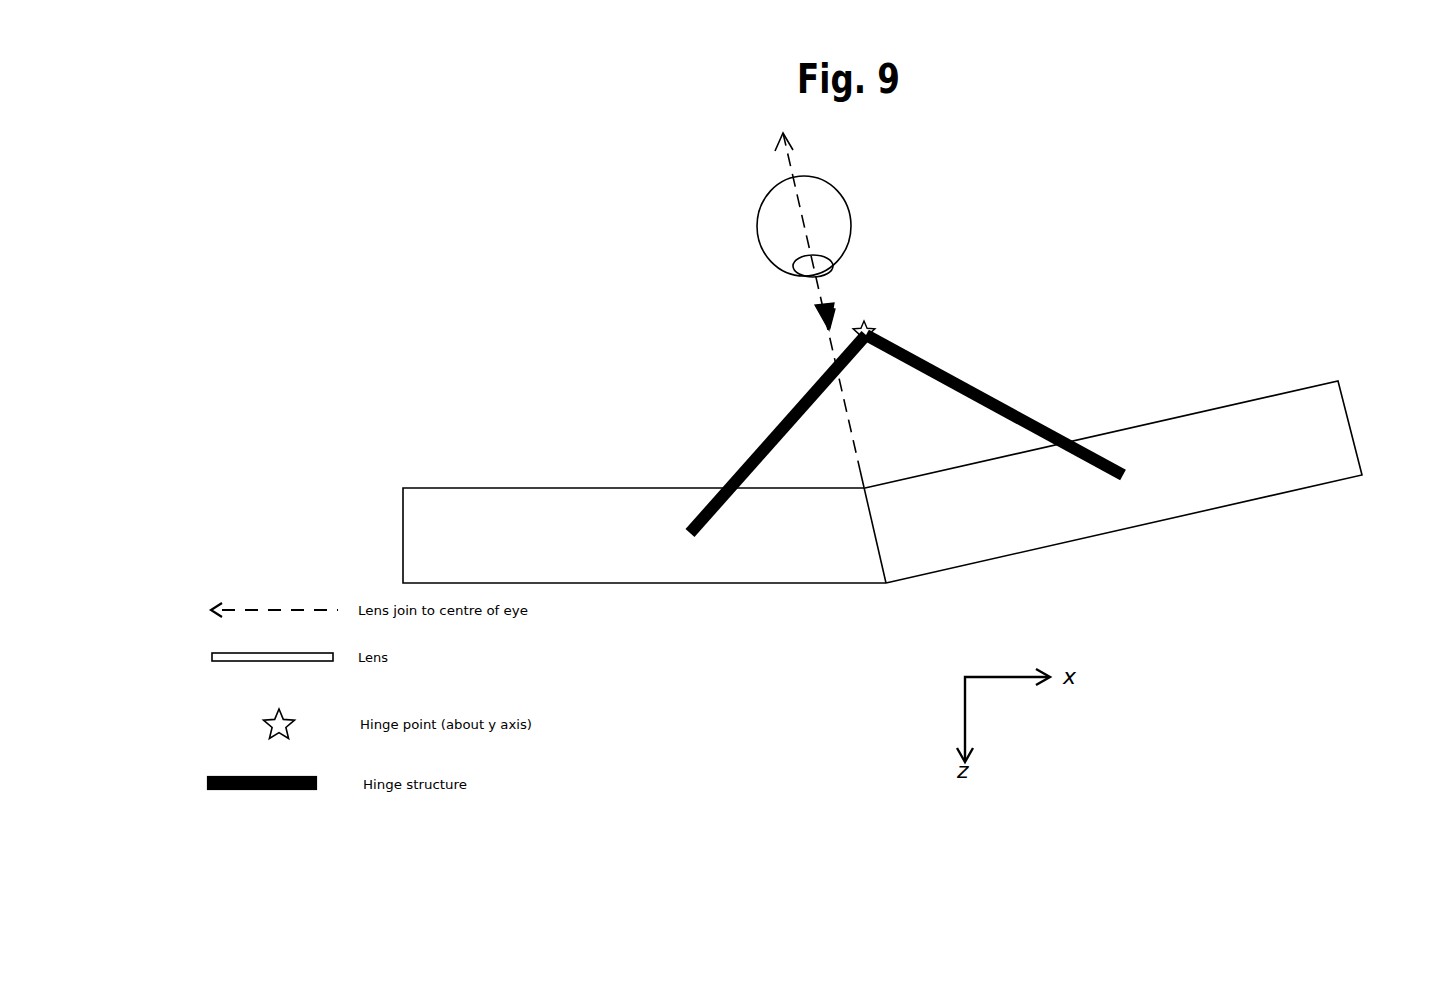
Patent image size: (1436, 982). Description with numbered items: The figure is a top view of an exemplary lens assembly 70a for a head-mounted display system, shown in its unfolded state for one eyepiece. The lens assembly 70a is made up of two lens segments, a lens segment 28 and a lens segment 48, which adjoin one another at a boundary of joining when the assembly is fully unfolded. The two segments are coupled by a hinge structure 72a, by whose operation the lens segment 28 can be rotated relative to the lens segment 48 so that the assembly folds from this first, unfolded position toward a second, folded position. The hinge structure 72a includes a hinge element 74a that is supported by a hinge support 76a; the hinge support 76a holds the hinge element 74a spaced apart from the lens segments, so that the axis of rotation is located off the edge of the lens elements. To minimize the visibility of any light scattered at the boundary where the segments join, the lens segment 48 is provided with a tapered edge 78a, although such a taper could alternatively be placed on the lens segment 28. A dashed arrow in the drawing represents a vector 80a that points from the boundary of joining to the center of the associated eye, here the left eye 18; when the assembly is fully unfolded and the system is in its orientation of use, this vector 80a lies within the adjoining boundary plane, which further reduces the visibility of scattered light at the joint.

The left eye 18 is at (851, 232).
The lens segment 28 is at (1207, 408).
The lens segment 48 is at (487, 490).
The lens assembly 70a is at (1030, 357).
The hinge structure 72a is at (816, 310).
The hinge element 74a is at (872, 327).
The hinge support 76a is at (757, 450).
The tapered edge 78a is at (880, 553).
The vector 80a is at (780, 141).